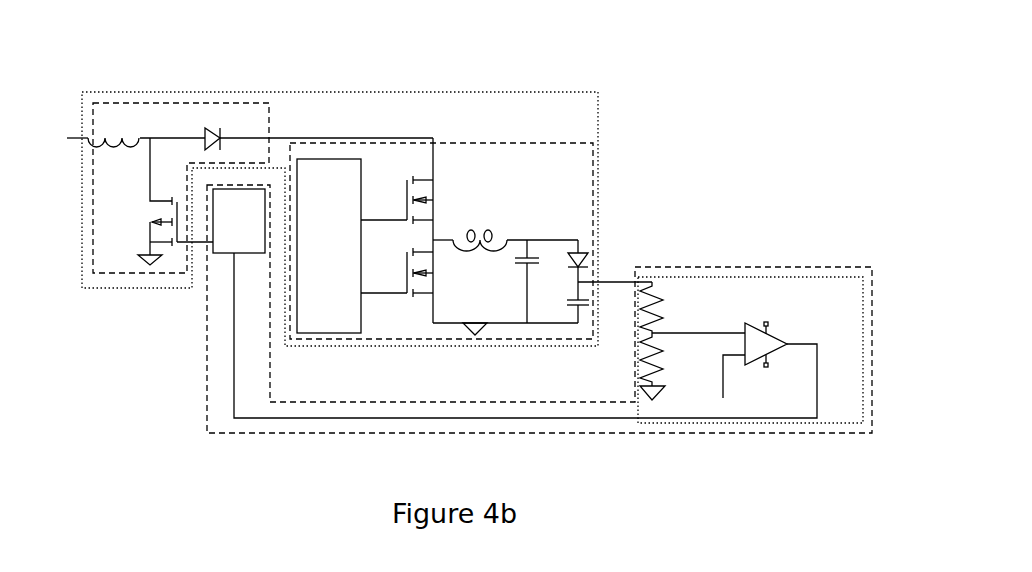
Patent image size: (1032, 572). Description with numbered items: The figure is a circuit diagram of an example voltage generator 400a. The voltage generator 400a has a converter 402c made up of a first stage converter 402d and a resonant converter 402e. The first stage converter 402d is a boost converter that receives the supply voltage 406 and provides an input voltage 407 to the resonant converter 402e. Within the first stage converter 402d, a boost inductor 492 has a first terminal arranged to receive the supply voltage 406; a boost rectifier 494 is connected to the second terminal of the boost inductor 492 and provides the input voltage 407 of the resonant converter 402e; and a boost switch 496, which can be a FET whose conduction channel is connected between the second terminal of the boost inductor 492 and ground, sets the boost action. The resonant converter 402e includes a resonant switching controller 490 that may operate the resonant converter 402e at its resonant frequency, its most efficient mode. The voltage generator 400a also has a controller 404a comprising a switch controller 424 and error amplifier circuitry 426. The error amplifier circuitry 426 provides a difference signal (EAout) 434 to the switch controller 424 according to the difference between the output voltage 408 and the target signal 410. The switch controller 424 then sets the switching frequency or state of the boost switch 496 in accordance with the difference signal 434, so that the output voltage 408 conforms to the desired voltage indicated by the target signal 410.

The voltage generator 400a is at (809, 84).
The supply voltage 406 is at (80, 138).
The boost inductor 492 is at (118, 141).
The boost rectifier 494 is at (207, 126).
The boost switch 496 is at (152, 225).
The first stage converter 402d is at (270, 124).
The switch controller 424 is at (225, 253).
The input voltage 407 is at (363, 137).
The converter 402c is at (550, 90).
The resonant converter 402e is at (597, 139).
The resonant switching controller 490 is at (297, 298).
The output voltage 408 is at (612, 280).
The controller 404a is at (739, 266).
The error amplifier circuitry 426 is at (660, 423).
The difference signal (EAout) 434 is at (798, 343).
The target signal 410 is at (725, 370).